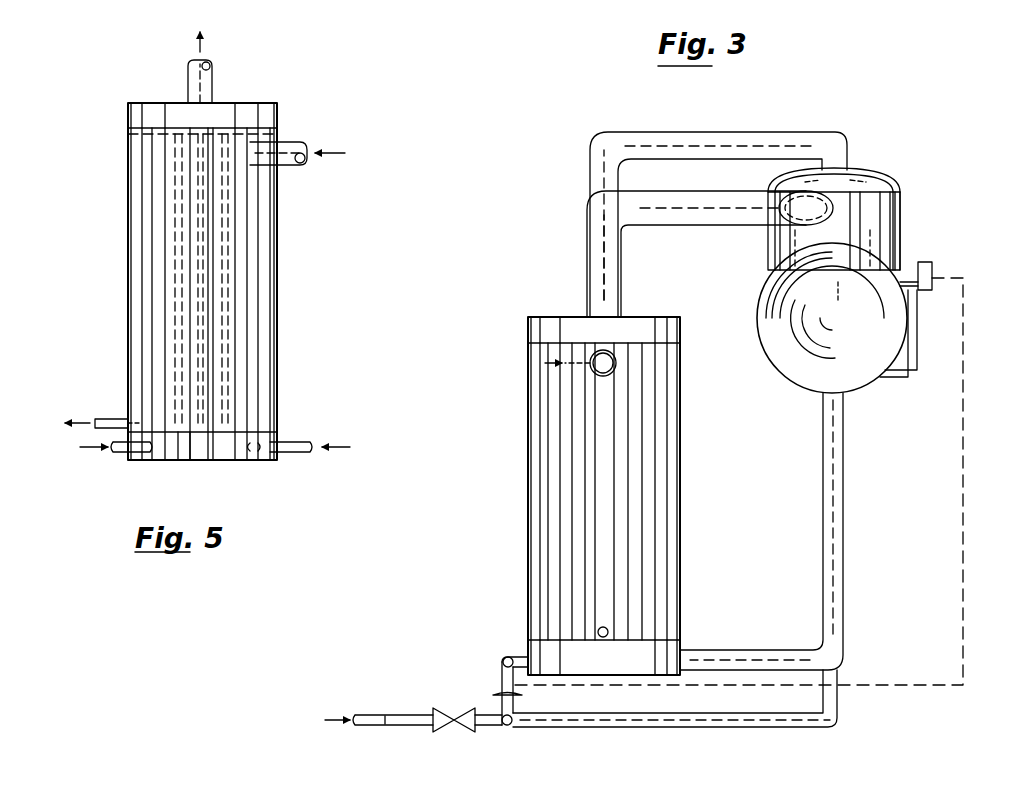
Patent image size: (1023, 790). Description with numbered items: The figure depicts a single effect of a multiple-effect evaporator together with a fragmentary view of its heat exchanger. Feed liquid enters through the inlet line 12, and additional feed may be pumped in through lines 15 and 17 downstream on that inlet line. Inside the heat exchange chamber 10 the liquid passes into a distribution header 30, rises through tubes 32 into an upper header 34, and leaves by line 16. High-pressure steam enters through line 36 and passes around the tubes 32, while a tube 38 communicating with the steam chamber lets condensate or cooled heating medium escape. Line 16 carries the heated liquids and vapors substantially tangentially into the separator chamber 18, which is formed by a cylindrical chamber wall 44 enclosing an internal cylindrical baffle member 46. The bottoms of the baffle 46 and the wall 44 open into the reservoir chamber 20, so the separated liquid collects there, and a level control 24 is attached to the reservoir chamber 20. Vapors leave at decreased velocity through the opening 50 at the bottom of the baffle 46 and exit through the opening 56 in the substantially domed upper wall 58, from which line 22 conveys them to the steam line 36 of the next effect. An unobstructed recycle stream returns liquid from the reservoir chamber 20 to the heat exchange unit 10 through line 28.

In FIG. 5, the heat exchange chamber 10 is at (278, 306).
In FIG. 3, the heat exchange chamber 10 is at (527, 484).
In FIG. 5, the inlet line 12 is at (115, 453).
In FIG. 3, the inlet line 12 is at (842, 712).
In FIG. 3, the feed supply line 15 is at (396, 725).
In FIG. 5, the line 16 is at (186, 80).
In FIG. 3, the line 16 is at (697, 201).
In FIG. 3, the feed supply line 17 is at (364, 725).
In FIG. 3, the separator chamber 18 is at (902, 206).
In FIG. 3, the reservoir chamber 20 is at (760, 320).
In FIG. 3, the line 22 is at (716, 136).
In FIG. 3, the level control 24 is at (934, 270).
In FIG. 5, the line 28 is at (298, 440).
In FIG. 3, the line 28 is at (738, 653).
In FIG. 5, the distribution header 30 is at (190, 455).
In FIG. 5, the tubes 32 is at (180, 290).
In FIG. 5, the header 34 is at (230, 115).
In FIG. 5, the line 36 is at (292, 140).
In FIG. 3, the line 36 is at (614, 372).
In FIG. 5, the tube 38 is at (110, 420).
In FIG. 3, the cylindrical chamber 44 is at (902, 236).
In FIG. 3, the internal cylindrical baffle member 46 is at (862, 228).
In FIG. 3, the opening 50 is at (838, 272).
In FIG. 3, the opening 56 is at (830, 172).
In FIG. 3, the domed upper wall 58 is at (870, 170).